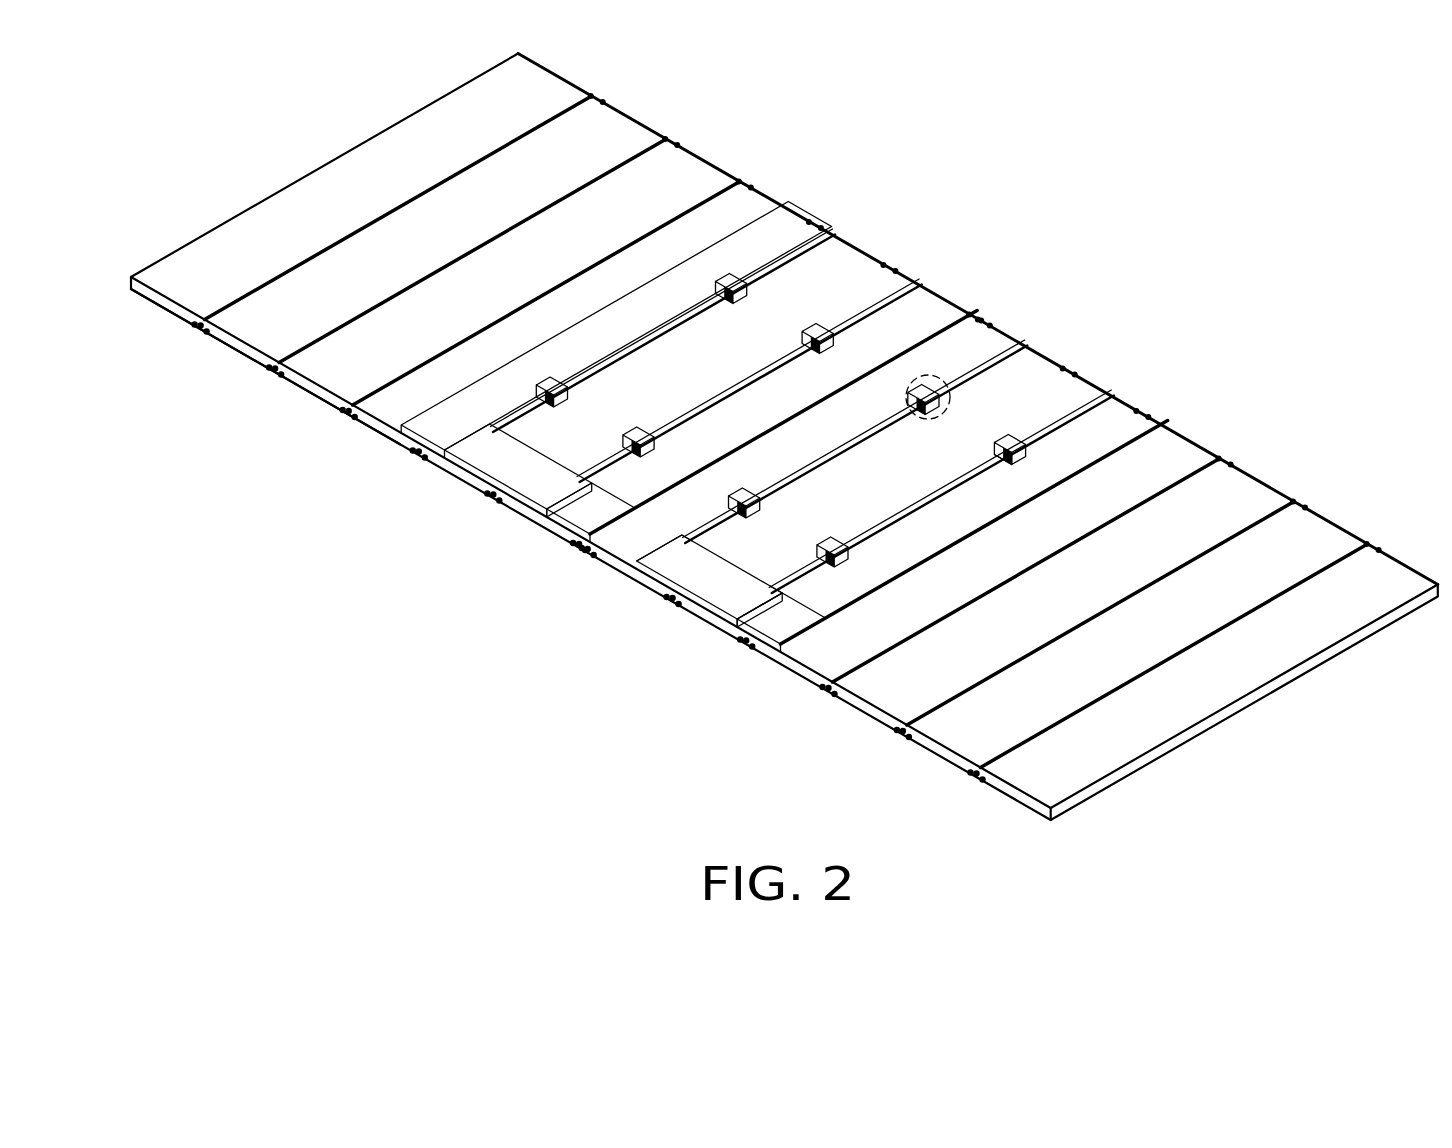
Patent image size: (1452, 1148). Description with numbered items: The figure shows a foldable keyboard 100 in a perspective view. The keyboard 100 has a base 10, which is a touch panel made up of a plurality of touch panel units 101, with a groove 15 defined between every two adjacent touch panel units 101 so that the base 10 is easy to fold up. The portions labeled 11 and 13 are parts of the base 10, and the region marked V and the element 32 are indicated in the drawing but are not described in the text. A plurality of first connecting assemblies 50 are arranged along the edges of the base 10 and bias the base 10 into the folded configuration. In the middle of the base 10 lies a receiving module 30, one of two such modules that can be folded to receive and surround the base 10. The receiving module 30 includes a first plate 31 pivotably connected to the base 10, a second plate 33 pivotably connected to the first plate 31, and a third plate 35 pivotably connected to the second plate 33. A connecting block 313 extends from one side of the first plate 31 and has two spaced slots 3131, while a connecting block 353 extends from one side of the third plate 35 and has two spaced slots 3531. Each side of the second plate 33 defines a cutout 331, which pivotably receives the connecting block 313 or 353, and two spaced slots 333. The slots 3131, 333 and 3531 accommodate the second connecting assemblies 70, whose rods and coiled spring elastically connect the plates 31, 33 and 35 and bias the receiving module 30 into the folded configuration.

The foldable keyboard 100 is at (283, 100).
The base 10 is at (784, 437).
The lower board layer 11 is at (1308, 673).
The upper board layer 13 is at (1323, 623).
The touch panel unit 101 is at (172, 307).
The groove 15 is at (515, 137).
The receiving module 30 is at (825, 475).
The first plate 31 is at (943, 310).
The connecting block 313 is at (688, 534).
The slot 3131 is at (737, 508).
The contact strip 32 is at (955, 348).
The second plate 33 is at (862, 277).
The cutout 331 is at (785, 596).
The slot 333 is at (840, 566).
The third plate 35 is at (790, 220).
The connecting block 353 is at (1072, 424).
The slot 3531 is at (1030, 455).
The first connecting assembly 50 is at (965, 778).
The second connecting assembly 70 is at (1003, 445).
The detail view region V is at (982, 346).